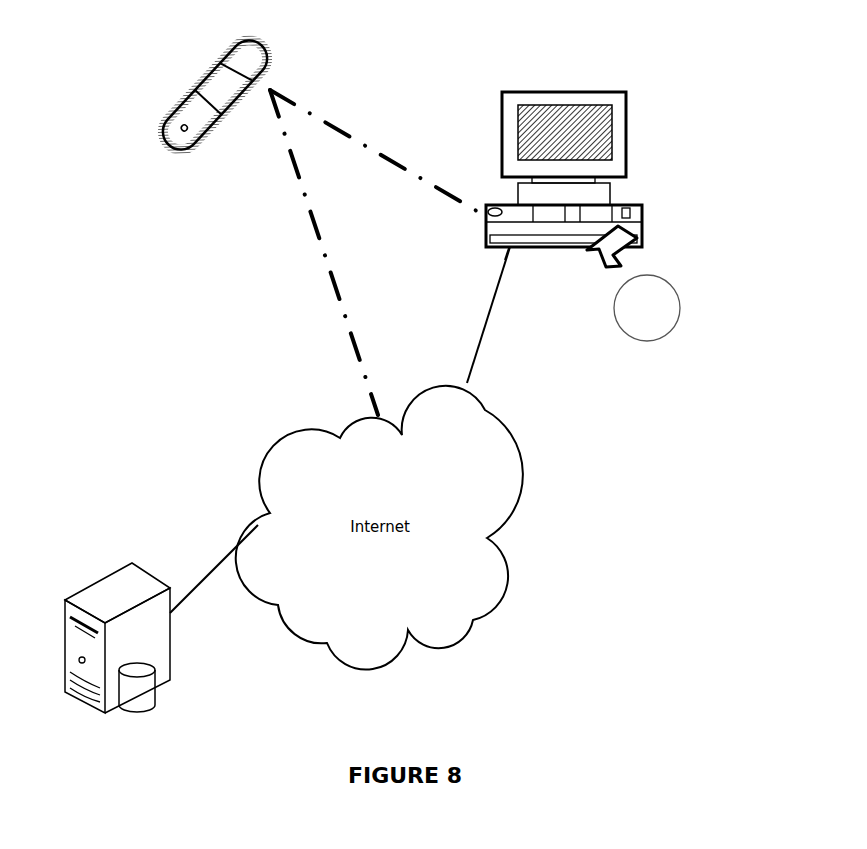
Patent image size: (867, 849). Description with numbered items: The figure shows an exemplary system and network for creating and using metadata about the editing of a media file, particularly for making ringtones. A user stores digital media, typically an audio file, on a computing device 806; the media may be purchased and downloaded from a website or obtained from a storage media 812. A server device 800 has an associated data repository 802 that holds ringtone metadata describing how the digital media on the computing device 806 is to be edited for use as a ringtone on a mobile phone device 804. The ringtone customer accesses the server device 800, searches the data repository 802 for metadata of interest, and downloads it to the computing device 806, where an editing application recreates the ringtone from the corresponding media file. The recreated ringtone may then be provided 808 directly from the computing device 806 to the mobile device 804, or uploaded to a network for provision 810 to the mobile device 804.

The server device 800 is at (147, 640).
The data repository 802 is at (153, 700).
The mobile phone device 804 is at (160, 147).
The computing device 806 is at (563, 92).
The provision of recreated ringtone from computing device 808 is at (382, 168).
The network provision of recreated ringtone 810 is at (323, 252).
The storage media 812 is at (612, 308).